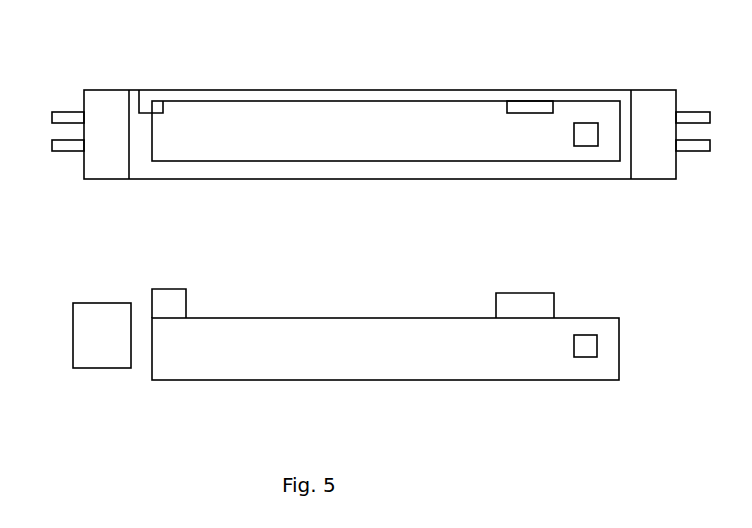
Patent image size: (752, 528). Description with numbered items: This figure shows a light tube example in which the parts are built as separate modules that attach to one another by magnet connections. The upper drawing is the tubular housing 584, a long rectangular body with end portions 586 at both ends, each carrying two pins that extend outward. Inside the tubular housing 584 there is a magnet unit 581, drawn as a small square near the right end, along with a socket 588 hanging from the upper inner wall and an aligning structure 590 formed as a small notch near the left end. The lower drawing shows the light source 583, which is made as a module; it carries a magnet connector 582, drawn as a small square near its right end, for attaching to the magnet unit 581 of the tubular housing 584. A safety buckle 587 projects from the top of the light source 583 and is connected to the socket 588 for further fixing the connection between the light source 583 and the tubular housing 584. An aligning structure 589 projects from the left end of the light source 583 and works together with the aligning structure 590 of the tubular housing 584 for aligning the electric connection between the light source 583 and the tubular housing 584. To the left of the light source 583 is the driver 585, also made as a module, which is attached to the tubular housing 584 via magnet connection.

The magnet unit 581 is at (592, 140).
The magnet connector 582 is at (587, 347).
The light source 583 is at (288, 367).
The tubular housing 584 is at (285, 99).
The driver 585 is at (93, 355).
The end cap 586 is at (113, 105).
The safety buckle 587 is at (538, 293).
The socket 588 is at (530, 105).
The aligning structure 589 is at (178, 308).
The aligning structure 590 is at (162, 100).